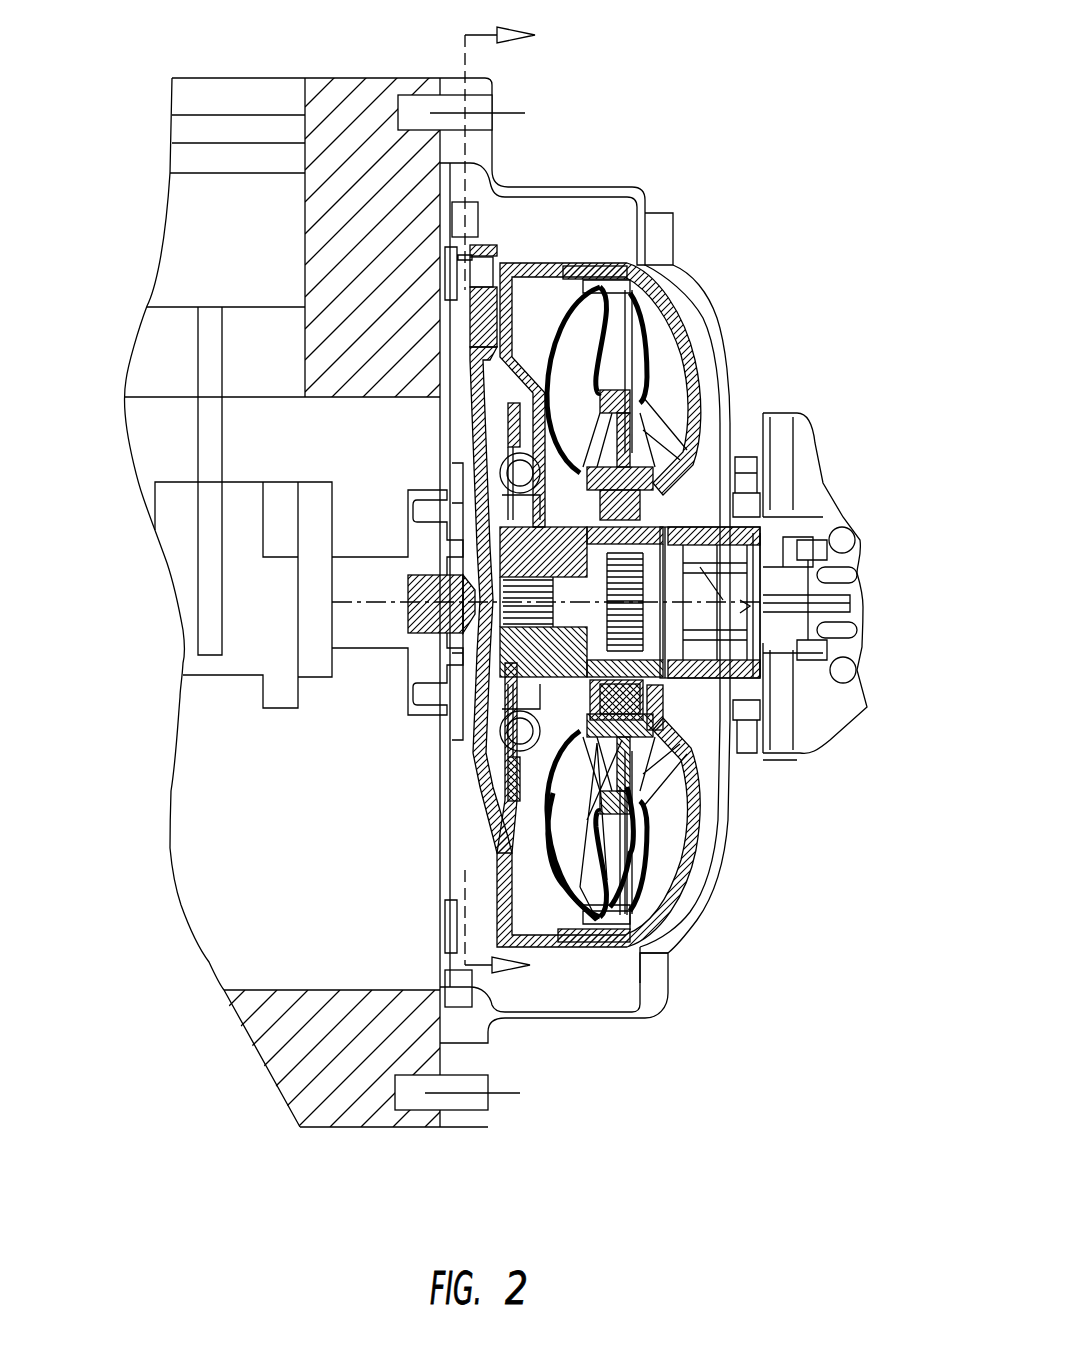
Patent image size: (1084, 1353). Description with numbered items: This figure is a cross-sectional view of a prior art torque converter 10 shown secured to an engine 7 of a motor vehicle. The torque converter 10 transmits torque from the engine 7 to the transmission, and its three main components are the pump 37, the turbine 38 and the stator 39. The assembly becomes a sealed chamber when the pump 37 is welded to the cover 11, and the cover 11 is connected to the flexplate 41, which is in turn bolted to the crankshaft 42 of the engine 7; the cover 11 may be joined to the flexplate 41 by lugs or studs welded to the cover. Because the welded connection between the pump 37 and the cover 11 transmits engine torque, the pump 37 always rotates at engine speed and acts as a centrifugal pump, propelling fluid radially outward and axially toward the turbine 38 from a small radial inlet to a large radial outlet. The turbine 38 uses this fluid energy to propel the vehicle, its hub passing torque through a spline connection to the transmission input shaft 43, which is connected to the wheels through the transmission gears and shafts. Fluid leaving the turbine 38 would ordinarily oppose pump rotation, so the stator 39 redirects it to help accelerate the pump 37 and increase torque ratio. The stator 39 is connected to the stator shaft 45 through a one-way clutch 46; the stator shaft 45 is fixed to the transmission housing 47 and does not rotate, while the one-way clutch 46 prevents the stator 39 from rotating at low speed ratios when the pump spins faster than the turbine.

The engine 7 is at (452, 1028).
The torque converter 10 is at (694, 318).
The cover 11 is at (463, 433).
The pump 37 is at (690, 891).
The turbine 38 is at (550, 891).
The stator 39 is at (590, 783).
The flexplate 41 is at (460, 764).
The crankshaft 42 is at (390, 655).
The transmission input shaft 43 is at (795, 627).
The stator shaft 45 is at (790, 537).
The one-way clutch 46 is at (663, 730).
The transmission housing 47 is at (815, 496).